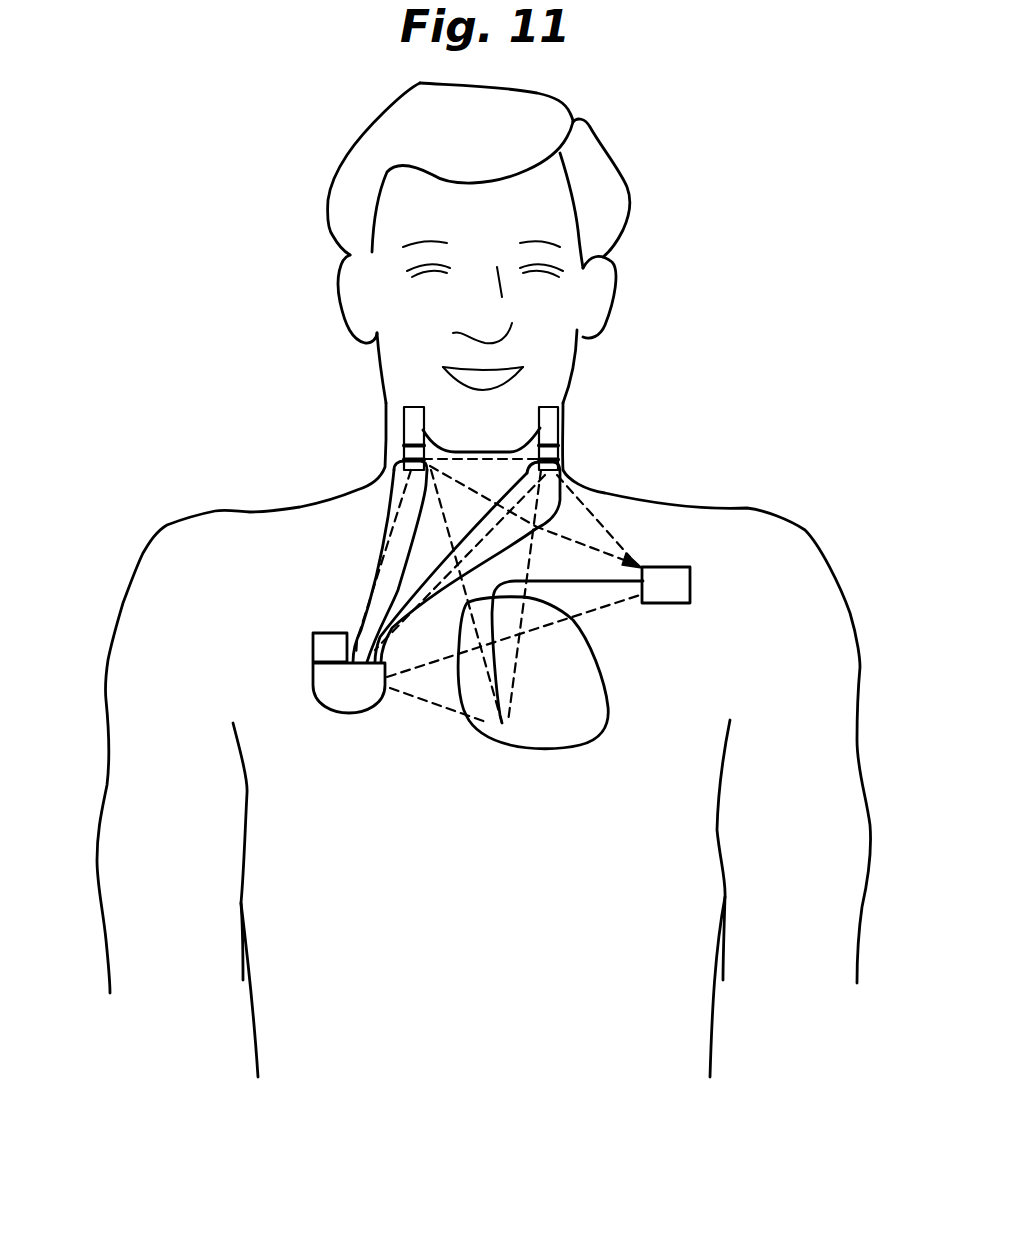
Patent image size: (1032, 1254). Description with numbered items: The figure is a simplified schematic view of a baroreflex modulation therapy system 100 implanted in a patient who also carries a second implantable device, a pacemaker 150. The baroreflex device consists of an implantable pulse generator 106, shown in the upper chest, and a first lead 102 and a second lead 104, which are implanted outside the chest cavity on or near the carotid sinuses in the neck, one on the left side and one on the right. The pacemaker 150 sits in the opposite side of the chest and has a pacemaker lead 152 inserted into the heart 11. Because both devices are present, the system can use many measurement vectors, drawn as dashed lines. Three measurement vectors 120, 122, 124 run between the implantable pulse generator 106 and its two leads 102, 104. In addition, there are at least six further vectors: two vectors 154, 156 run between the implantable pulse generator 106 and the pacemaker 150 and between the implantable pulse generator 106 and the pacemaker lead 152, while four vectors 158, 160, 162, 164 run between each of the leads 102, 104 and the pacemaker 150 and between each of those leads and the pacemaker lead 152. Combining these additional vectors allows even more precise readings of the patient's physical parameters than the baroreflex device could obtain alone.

The baroreflex modulation therapy system 100 is at (268, 604).
The first lead 102 is at (578, 448).
The second lead 104 is at (390, 444).
The implantable pulse generator 106 is at (330, 682).
The measurement vector 120 is at (490, 458).
The measurement vector 122 is at (540, 527).
The measurement vector 124 is at (425, 517).
The pacemaker 150 is at (690, 584).
The pacemaker lead 152 is at (614, 572).
The measurement vector 154 is at (427, 666).
The measurement vector 156 is at (440, 708).
The measurement vector 158 is at (535, 571).
The measurement vector 160 is at (570, 556).
The measurement vector 162 is at (400, 510).
The measurement vector 164 is at (747, 508).
The heart 11 is at (578, 722).